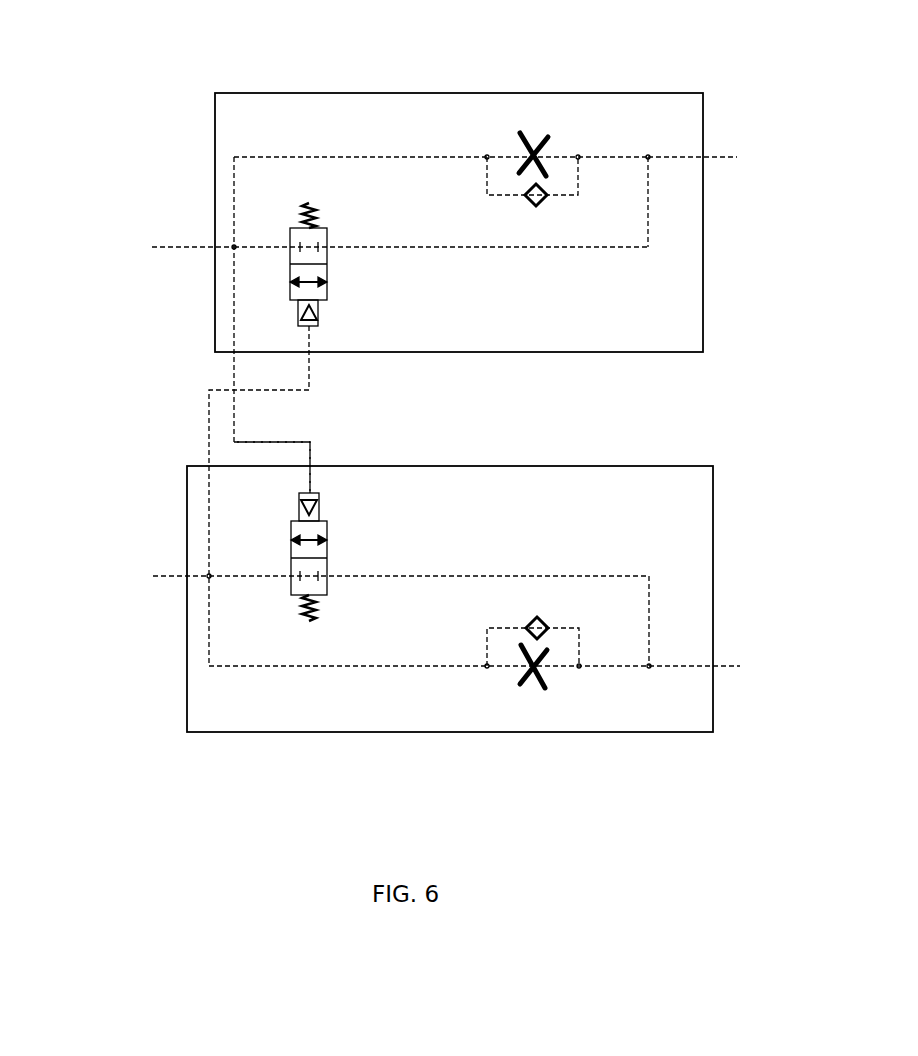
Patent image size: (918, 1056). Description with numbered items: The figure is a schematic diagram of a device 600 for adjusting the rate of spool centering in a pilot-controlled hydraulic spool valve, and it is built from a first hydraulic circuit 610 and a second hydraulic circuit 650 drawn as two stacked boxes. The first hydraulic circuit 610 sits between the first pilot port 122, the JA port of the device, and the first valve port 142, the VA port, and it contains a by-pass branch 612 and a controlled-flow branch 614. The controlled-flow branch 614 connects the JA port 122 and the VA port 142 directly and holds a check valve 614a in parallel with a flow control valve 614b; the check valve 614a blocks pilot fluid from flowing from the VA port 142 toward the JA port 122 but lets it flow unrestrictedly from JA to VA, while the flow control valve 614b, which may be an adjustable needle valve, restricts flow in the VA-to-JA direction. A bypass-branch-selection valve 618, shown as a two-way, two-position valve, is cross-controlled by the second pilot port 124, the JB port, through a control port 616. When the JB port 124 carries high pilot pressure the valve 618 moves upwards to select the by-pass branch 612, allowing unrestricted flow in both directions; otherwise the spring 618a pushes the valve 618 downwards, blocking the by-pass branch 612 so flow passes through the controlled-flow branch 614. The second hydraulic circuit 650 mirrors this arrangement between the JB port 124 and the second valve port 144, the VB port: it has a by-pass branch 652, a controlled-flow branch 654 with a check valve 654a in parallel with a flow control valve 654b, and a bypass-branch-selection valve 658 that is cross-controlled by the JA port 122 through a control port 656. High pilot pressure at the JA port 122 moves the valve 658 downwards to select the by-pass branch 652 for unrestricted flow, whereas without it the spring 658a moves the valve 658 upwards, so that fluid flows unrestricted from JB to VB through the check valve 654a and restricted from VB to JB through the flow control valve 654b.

The device 600 is at (132, 98).
The first hydraulic circuit 610 is at (703, 127).
The by-pass branch 612 is at (604, 247).
The controlled-flow branch 614 is at (318, 157).
The check valve 614a is at (546, 203).
The flow control valve 614b is at (518, 152).
The control port 616 is at (309, 332).
The bypass-branch-selection valve 618 is at (335, 297).
The spring 618a is at (313, 203).
The first pilot port 122 is at (182, 249).
The first valve port 142 is at (722, 163).
The second pilot port 124 is at (155, 572).
The second valve port 144 is at (733, 662).
The second hydraulic circuit 650 is at (713, 718).
The by-pass branch 652 is at (604, 576).
The controlled-flow branch 654 is at (270, 666).
The check valve 654a is at (533, 622).
The flow control valve 654b is at (543, 672).
The control port 656 is at (309, 490).
The bypass-branch-selection valve 658 is at (335, 540).
The spring 658a is at (310, 621).